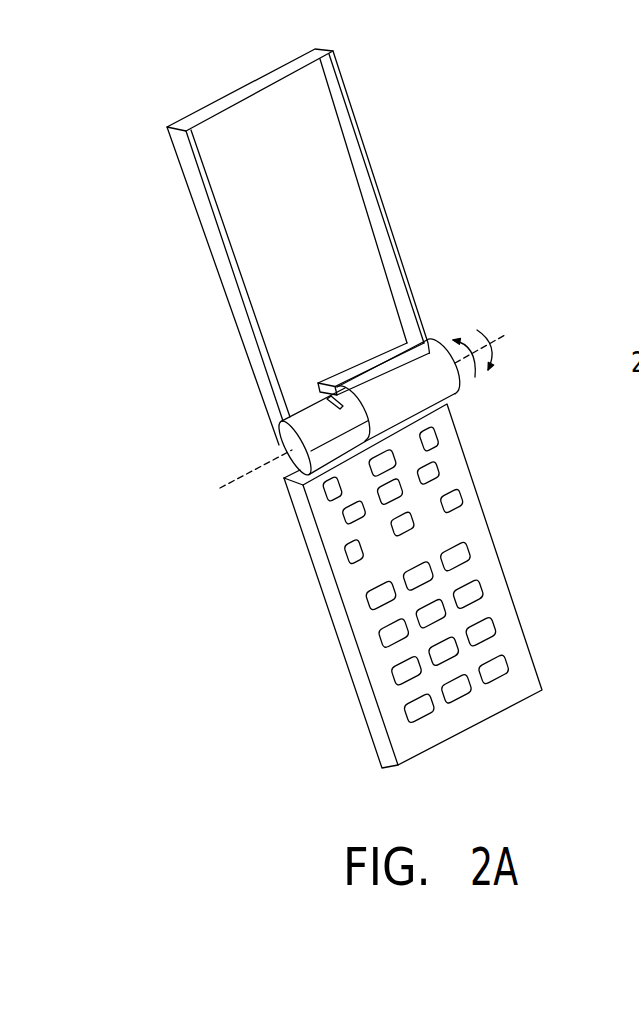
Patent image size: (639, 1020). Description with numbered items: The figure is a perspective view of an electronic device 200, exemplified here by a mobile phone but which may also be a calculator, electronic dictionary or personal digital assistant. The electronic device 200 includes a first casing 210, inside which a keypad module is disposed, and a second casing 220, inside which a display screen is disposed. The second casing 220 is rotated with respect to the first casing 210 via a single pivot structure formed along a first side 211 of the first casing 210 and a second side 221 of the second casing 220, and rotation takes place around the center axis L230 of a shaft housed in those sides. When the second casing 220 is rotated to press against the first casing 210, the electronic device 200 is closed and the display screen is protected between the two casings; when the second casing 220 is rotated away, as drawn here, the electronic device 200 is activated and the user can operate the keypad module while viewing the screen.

The electronic device 200 is at (108, 74).
The second casing 220 is at (370, 200).
The second side 221 is at (283, 442).
The first side 211 is at (440, 383).
The first casing 210 is at (500, 605).
The center axis L230 is at (395, 397).